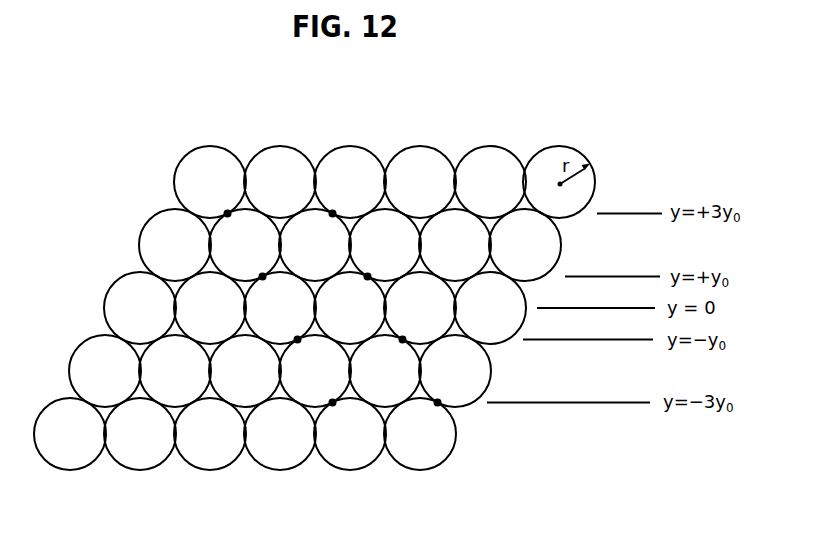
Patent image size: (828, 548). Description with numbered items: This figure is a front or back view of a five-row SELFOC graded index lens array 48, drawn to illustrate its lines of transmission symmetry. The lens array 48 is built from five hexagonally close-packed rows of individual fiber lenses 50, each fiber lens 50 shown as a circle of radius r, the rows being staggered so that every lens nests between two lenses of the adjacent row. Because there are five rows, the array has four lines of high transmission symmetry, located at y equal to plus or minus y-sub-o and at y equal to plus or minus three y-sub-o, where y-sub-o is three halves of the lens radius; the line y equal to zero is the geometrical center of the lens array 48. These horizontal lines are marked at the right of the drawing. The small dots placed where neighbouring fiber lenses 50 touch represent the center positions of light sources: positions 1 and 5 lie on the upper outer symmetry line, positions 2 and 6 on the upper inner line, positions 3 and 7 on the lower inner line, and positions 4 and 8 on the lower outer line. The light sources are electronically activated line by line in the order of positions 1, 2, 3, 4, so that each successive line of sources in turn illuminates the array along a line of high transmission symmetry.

The graded index lens array 48 is at (195, 138).
The fiber lenses 50 is at (412, 160).
The light source center position 1 is at (231, 226).
The light source center position 2 is at (266, 291).
The light source center position 3 is at (301, 355).
The light source center position 4 is at (335, 416).
The light source center position 5 is at (338, 203).
The light source center position 6 is at (372, 266).
The light source center position 7 is at (406, 328).
The light source center position 8 is at (443, 392).